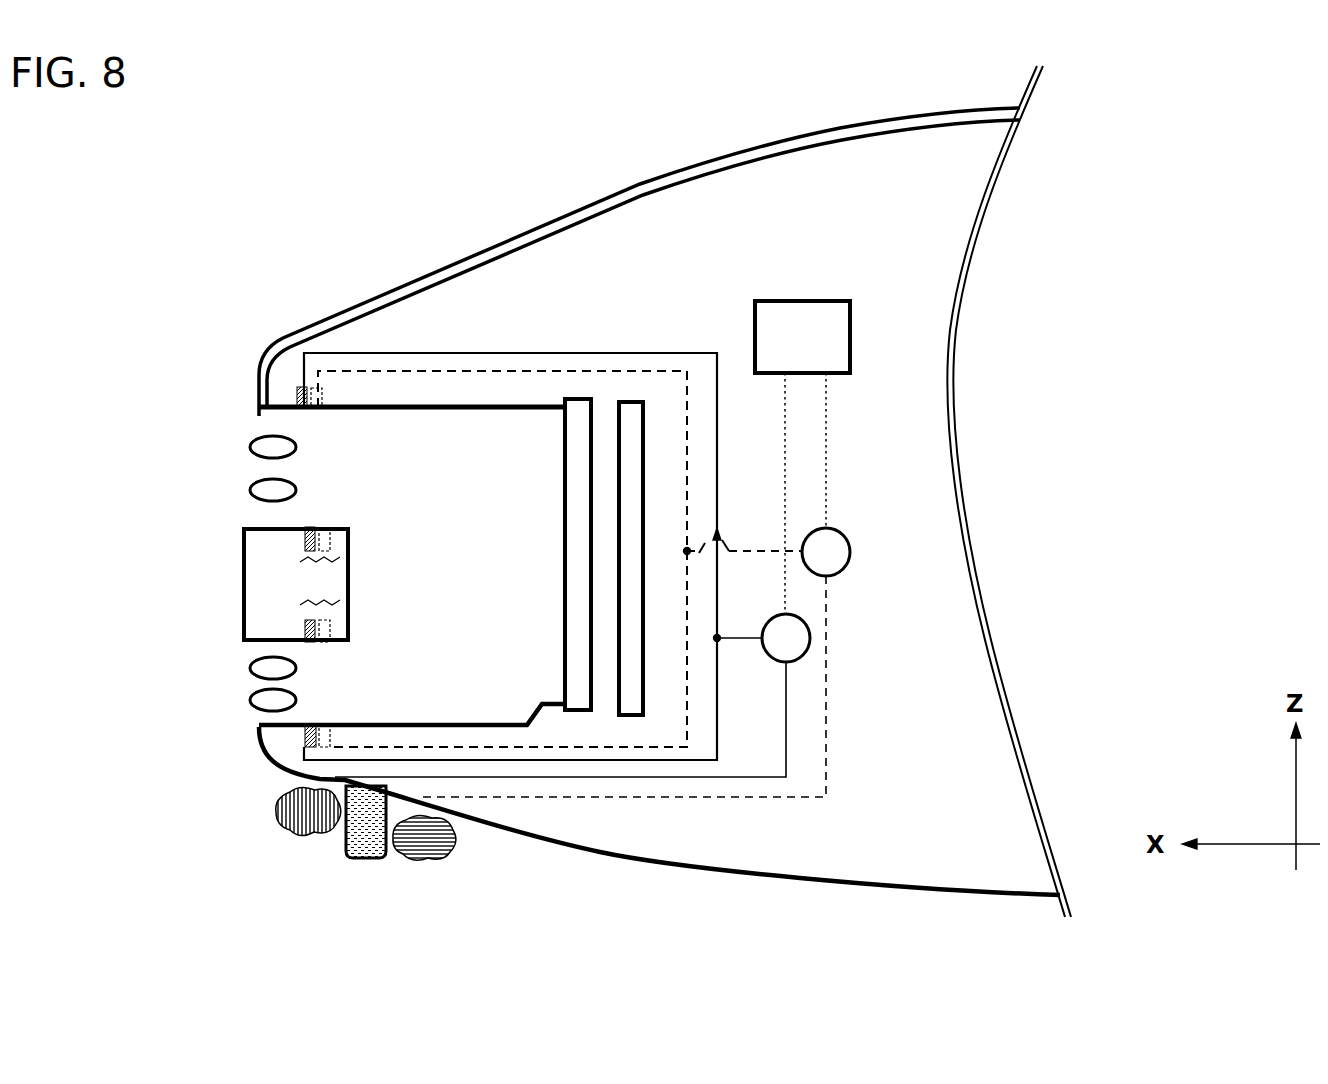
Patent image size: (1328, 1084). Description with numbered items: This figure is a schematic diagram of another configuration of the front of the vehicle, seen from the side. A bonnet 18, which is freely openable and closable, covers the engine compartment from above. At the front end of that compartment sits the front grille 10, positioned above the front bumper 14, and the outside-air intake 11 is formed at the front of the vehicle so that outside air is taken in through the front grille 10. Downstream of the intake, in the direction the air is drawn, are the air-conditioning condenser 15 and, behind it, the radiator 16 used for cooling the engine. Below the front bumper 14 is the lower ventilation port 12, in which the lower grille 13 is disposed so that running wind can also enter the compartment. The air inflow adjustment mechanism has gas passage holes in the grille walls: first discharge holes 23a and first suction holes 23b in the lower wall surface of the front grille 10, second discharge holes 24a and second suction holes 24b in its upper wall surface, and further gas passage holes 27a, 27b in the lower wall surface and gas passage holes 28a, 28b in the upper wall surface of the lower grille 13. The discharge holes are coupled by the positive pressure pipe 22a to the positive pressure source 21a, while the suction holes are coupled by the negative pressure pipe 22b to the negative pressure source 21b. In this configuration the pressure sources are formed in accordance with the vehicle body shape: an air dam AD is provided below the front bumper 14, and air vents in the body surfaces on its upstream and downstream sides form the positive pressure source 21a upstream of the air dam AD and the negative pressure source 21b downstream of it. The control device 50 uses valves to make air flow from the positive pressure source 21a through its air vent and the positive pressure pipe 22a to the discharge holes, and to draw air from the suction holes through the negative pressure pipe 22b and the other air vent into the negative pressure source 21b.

The front grille 10 is at (252, 490).
The outside-air intake 11 is at (265, 418).
The lower ventilation port 12 is at (262, 723).
The lower grille 13 is at (252, 668).
The front bumper 14 is at (350, 580).
The air-conditioning condenser 15 is at (565, 402).
The radiator 16 is at (637, 717).
The bonnet 18 is at (735, 148).
The positive pressure source 21a is at (290, 815).
The negative pressure source 21b is at (430, 858).
The positive pressure pipe 22a is at (625, 353).
The negative pressure pipe 22b is at (703, 798).
The first discharge holes 23a is at (310, 527).
The first suction holes 23b is at (330, 538).
The second discharge holes 24a is at (323, 397).
The second suction holes 24b is at (297, 400).
The gap 27a is at (330, 735).
The insulating member 27b is at (305, 735).
The gap 28a is at (330, 628).
The insulating member 28b is at (308, 642).
The control device 50 is at (812, 300).
The air dam AD is at (350, 858).